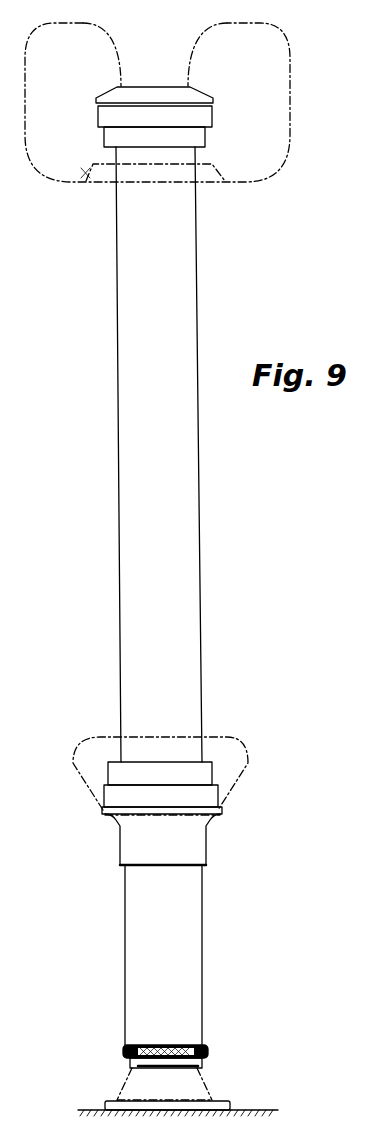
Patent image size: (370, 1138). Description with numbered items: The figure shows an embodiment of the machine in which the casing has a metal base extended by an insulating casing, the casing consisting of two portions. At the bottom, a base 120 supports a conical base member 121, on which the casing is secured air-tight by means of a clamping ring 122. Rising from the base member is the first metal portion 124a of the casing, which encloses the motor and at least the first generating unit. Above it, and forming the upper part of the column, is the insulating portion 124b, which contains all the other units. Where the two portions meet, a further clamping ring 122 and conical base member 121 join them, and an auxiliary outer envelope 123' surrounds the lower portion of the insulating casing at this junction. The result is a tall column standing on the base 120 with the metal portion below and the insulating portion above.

The base 120 is at (112, 1103).
The conical base member 121 is at (195, 843).
The clamping ring 122 is at (192, 770).
The auxiliary outer envelope 123' is at (132, 776).
The first metal portion 124a is at (130, 968).
The insulating portion 124b is at (128, 467).